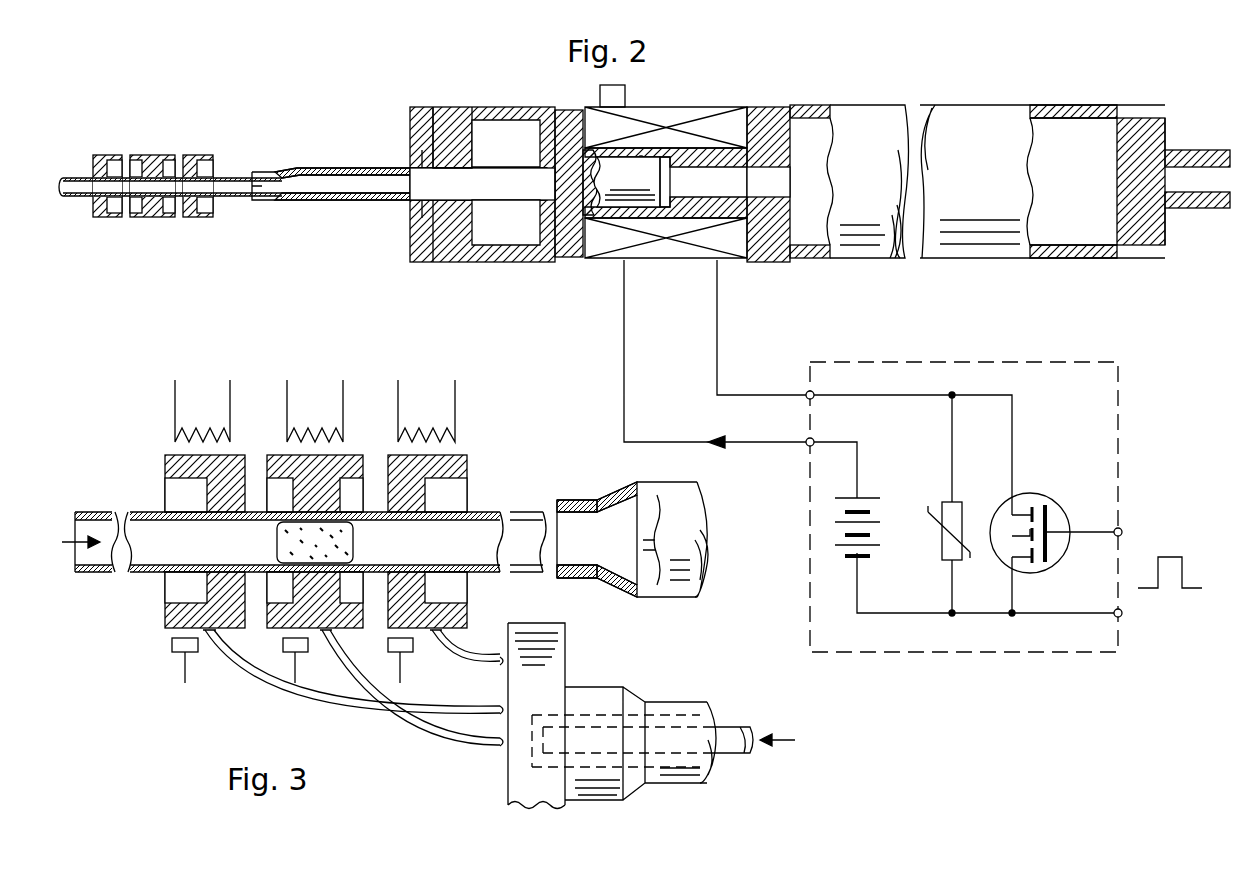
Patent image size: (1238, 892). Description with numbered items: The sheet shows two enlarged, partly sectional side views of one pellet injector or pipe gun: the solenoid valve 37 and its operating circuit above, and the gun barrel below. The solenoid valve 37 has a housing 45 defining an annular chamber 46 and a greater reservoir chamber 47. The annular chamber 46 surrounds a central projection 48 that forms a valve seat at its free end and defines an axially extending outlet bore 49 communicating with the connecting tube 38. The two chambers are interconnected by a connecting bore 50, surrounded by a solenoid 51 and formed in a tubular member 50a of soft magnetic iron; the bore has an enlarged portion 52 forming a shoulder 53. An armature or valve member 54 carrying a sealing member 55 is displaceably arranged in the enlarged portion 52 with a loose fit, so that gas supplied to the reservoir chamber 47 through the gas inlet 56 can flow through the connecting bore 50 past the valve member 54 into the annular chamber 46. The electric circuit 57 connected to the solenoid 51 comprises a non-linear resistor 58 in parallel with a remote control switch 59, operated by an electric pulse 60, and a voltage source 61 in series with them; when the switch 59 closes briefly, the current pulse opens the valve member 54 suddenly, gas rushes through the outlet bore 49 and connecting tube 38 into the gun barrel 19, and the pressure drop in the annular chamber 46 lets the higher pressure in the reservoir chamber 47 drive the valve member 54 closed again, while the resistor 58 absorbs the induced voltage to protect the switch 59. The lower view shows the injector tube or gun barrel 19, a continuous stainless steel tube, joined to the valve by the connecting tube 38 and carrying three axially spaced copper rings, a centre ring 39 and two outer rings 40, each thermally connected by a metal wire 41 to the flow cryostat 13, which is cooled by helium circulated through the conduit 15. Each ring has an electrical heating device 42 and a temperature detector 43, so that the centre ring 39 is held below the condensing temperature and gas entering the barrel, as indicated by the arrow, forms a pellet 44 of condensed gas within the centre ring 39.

In FIG. 3, the flow cryostat 13 is at (560, 662).
In FIG. 3, the conduit 15 is at (735, 727).
In FIG. 2, the injector tube or gun barrel 19 is at (88, 198).
In FIG. 3, the injector tube or gun barrel 19 is at (148, 575).
In FIG. 2, the solenoid valve 37 is at (796, 97).
In FIG. 2, the connecting tube 38 is at (352, 168).
In FIG. 3, the connecting tube 38 is at (618, 497).
In FIG. 2, the centre ring 39 is at (151, 156).
In FIG. 3, the centre ring 39 is at (357, 456).
In FIG. 2, the outer rings 40 is at (103, 156).
In FIG. 3, the outer rings 40 is at (165, 470).
In FIG. 3, the metal wire 41 is at (462, 690).
In FIG. 3, the electrical heating device 42 is at (172, 425).
In FIG. 3, the temperature detector 43 is at (180, 658).
In FIG. 3, the pellet 44 is at (275, 545).
In FIG. 2, the housing 45 is at (526, 112).
In FIG. 2, the annular chamber 46 is at (484, 118).
In FIG. 2, the reservoir chamber 47 is at (1090, 130).
In FIG. 2, the central projection 48 is at (533, 210).
In FIG. 2, the outlet bore 49 is at (490, 205).
In FIG. 2, the connecting bore 50 is at (745, 178).
In FIG. 2, the tubular member 50a is at (735, 250).
In FIG. 2, the solenoid 51 is at (600, 250).
In FIG. 2, the enlarged portion 52 is at (642, 155).
In FIG. 2, the shoulder 53 is at (672, 160).
In FIG. 2, the valve member 54 is at (642, 193).
In FIG. 2, the sealing member 55 is at (534, 152).
In FIG. 2, the gas inlet 56 is at (1200, 155).
In FIG. 2, the electric circuit 57 is at (1128, 437).
In FIG. 2, the non-linear resistor 58 is at (942, 548).
In FIG. 2, the remote control switch 59 is at (1055, 494).
In FIG. 2, the electric pulse 60 is at (1170, 556).
In FIG. 2, the voltage source 61 is at (840, 538).